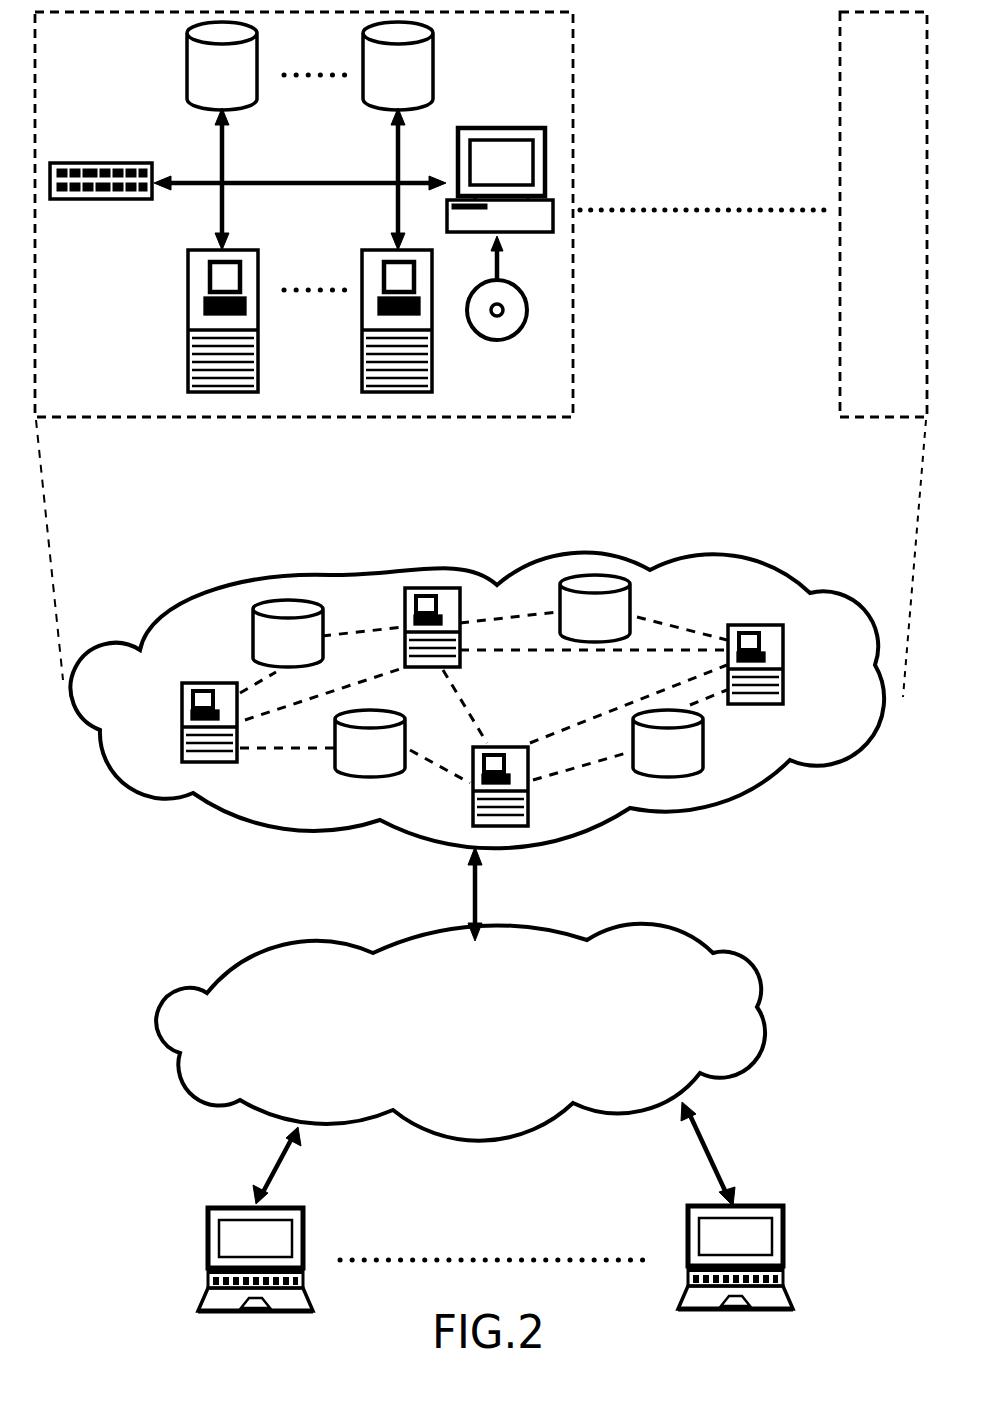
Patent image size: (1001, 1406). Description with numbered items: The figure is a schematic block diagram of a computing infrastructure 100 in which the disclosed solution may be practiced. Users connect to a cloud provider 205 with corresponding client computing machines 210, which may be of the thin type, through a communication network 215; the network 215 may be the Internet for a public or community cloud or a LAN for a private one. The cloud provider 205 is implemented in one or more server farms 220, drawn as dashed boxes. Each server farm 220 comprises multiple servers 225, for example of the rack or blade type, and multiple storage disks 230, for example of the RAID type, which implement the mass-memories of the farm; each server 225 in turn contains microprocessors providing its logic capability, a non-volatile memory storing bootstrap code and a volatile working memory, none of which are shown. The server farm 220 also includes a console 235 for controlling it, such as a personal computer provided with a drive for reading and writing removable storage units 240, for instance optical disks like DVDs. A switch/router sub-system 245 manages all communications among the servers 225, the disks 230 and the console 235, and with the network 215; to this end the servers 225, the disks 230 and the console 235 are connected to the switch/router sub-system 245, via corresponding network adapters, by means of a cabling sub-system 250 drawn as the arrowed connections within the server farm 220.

The system 100 is at (126, 893).
The cloud provider 205 is at (267, 580).
The client computing machine 210 is at (213, 1247).
The communication network 215 is at (397, 933).
The server farm 220 is at (345, 430).
The server computing machine 225 is at (188, 368).
The storage disk 230 is at (186, 96).
The console 235 is at (470, 126).
The removable storage unit 240 is at (485, 340).
The switch/router sub-system 245 is at (78, 200).
The cabling sub-system 250 is at (292, 188).